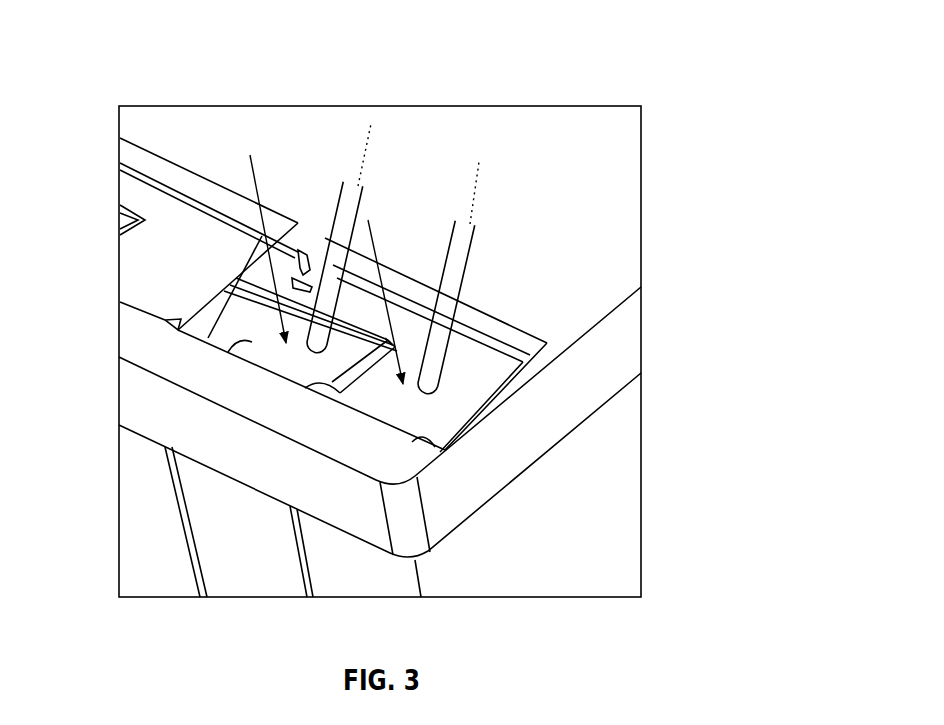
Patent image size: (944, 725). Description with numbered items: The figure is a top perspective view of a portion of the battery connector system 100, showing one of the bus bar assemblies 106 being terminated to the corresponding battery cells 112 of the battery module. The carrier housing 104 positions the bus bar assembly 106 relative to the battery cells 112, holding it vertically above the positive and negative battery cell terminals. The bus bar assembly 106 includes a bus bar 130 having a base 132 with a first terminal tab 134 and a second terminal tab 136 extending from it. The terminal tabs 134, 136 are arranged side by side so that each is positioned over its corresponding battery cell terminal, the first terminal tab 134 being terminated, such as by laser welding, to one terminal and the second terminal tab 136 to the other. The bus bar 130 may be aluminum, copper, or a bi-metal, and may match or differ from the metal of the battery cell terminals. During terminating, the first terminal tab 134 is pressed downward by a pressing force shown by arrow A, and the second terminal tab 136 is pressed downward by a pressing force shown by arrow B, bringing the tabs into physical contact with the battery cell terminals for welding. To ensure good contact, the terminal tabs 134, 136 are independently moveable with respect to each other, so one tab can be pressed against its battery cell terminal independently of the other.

The battery connector system 100 is at (615, 90).
The carrier housing 104 is at (617, 342).
The bus bar assembly 106 is at (268, 360).
The battery cells 112 is at (250, 572).
The bus bar 130 is at (480, 338).
The base 132 is at (408, 317).
The first terminal tab 134 is at (430, 412).
The second terminal tab 136 is at (255, 346).
The arrow A is at (392, 345).
The arrow B is at (296, 288).